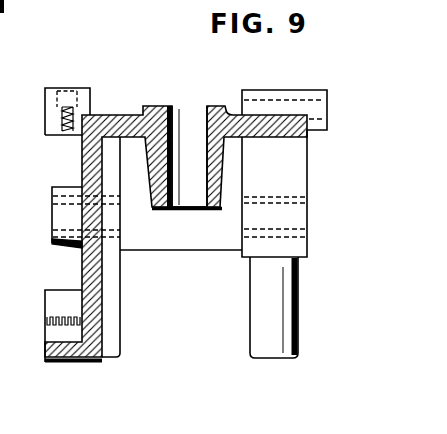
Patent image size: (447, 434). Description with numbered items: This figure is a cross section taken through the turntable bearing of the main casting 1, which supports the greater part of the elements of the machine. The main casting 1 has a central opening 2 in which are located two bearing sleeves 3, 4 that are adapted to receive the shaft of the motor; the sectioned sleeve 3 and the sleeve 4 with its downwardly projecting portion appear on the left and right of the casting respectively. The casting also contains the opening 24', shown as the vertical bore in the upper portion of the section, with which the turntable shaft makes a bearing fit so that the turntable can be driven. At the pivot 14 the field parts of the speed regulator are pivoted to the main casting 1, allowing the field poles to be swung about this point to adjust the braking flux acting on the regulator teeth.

The main casting 1 is at (114, 115).
The opening 24' is at (203, 136).
The pivot 14 is at (312, 100).
The bearing sleeve 4 is at (296, 236).
The central opening 2 is at (58, 218).
The bearing sleeve 3 is at (52, 241).